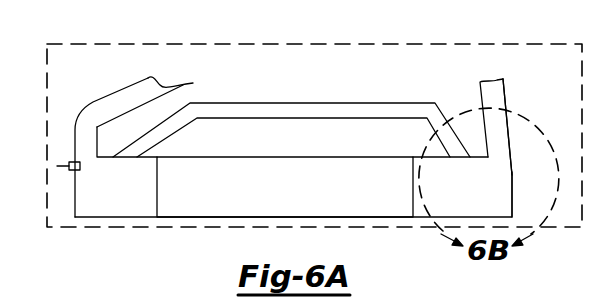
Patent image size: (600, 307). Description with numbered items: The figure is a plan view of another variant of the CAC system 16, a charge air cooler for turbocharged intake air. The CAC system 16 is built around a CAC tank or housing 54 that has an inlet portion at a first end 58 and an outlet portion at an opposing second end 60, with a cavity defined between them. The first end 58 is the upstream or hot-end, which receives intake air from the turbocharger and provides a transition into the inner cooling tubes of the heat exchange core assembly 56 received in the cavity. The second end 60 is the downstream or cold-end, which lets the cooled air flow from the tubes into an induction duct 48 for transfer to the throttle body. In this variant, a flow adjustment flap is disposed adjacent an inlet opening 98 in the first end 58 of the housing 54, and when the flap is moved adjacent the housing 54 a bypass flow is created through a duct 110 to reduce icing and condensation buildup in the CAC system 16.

The CAC system 16 is at (323, 43).
The induction duct 48 is at (162, 84).
The duct 110 is at (303, 108).
The heat exchange core assembly 56 is at (238, 180).
The housing 54 is at (325, 153).
The inlet opening 98 is at (502, 142).
The first end 58 is at (513, 192).
The second end 60 is at (75, 193).